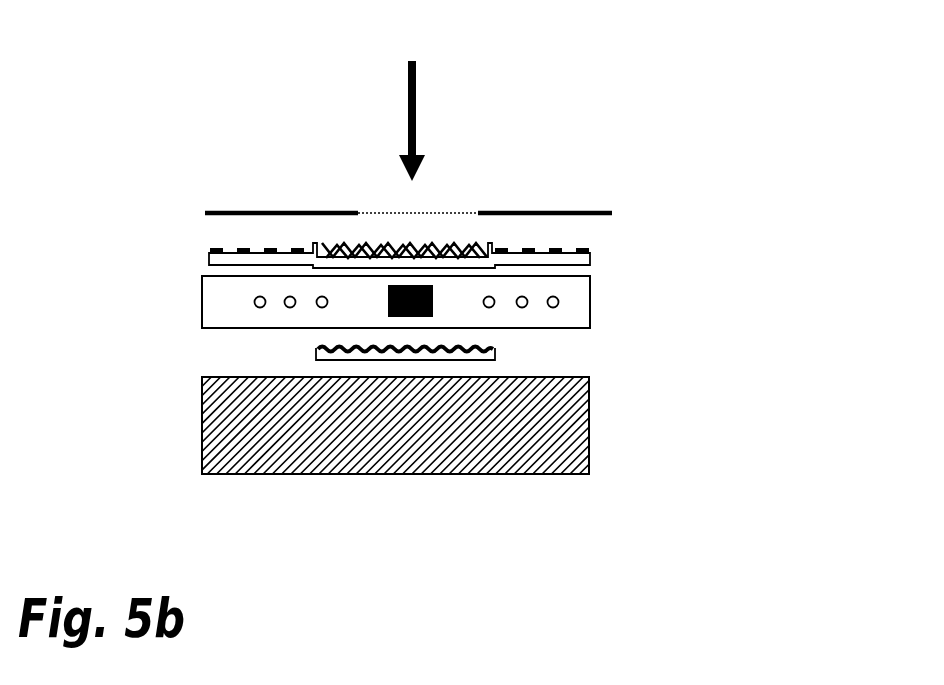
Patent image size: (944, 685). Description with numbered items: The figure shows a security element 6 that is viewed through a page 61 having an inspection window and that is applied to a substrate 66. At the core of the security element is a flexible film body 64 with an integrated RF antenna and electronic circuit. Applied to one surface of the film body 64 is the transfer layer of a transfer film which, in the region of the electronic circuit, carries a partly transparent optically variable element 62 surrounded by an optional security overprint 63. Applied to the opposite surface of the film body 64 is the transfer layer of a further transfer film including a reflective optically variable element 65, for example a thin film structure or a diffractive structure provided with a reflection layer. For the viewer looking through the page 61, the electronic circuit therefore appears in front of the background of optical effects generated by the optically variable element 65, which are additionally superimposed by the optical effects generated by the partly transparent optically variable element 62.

The security element 6 is at (519, 110).
The page 61 is at (552, 209).
The optically variable element 62 is at (355, 244).
The security overprint 63 is at (590, 252).
The flexible film body 64 is at (590, 297).
The optically variable element 65 is at (495, 356).
The substrate 66 is at (575, 443).